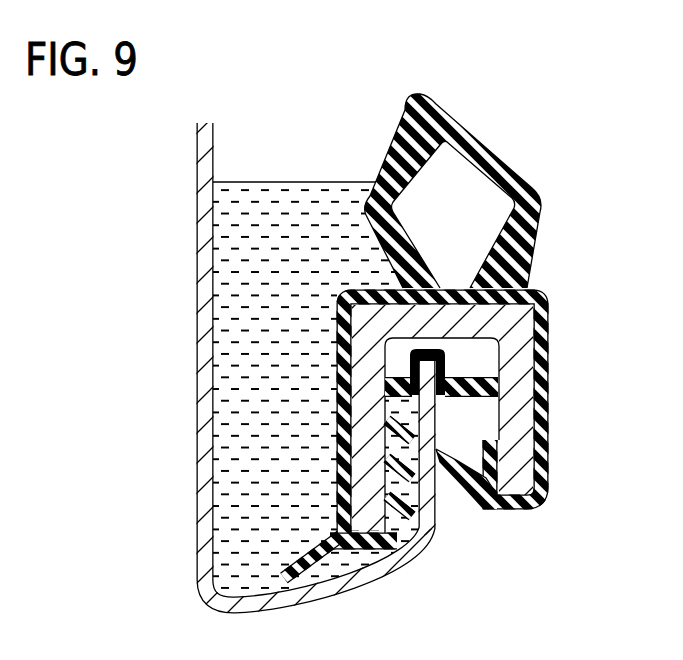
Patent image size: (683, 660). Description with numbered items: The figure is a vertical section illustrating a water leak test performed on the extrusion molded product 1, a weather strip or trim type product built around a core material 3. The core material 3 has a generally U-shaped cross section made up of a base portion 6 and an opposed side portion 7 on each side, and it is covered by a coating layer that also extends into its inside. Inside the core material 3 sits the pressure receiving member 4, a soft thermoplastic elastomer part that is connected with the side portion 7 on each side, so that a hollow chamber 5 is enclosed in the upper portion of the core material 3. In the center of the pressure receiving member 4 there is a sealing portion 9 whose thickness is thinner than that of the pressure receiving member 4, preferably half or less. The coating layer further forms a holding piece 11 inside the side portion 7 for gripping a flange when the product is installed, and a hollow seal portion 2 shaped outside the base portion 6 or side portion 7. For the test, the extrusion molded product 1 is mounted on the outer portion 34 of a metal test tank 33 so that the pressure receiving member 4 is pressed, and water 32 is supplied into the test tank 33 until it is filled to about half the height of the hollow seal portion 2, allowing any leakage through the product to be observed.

The extrusion molded product 1 is at (518, 282).
The hollow seal portion 2 is at (508, 173).
The core material 3 is at (378, 322).
The pressure receiving member 4 is at (476, 393).
The hollow chamber 5 is at (458, 357).
The base portion 6 is at (445, 320).
The side portion 7 is at (513, 462).
The sealing portion 9 is at (427, 348).
The holding piece 11 is at (475, 493).
The water 32 is at (293, 181).
The test tank 33 is at (198, 428).
The outer portion of the test tank 34 is at (437, 533).